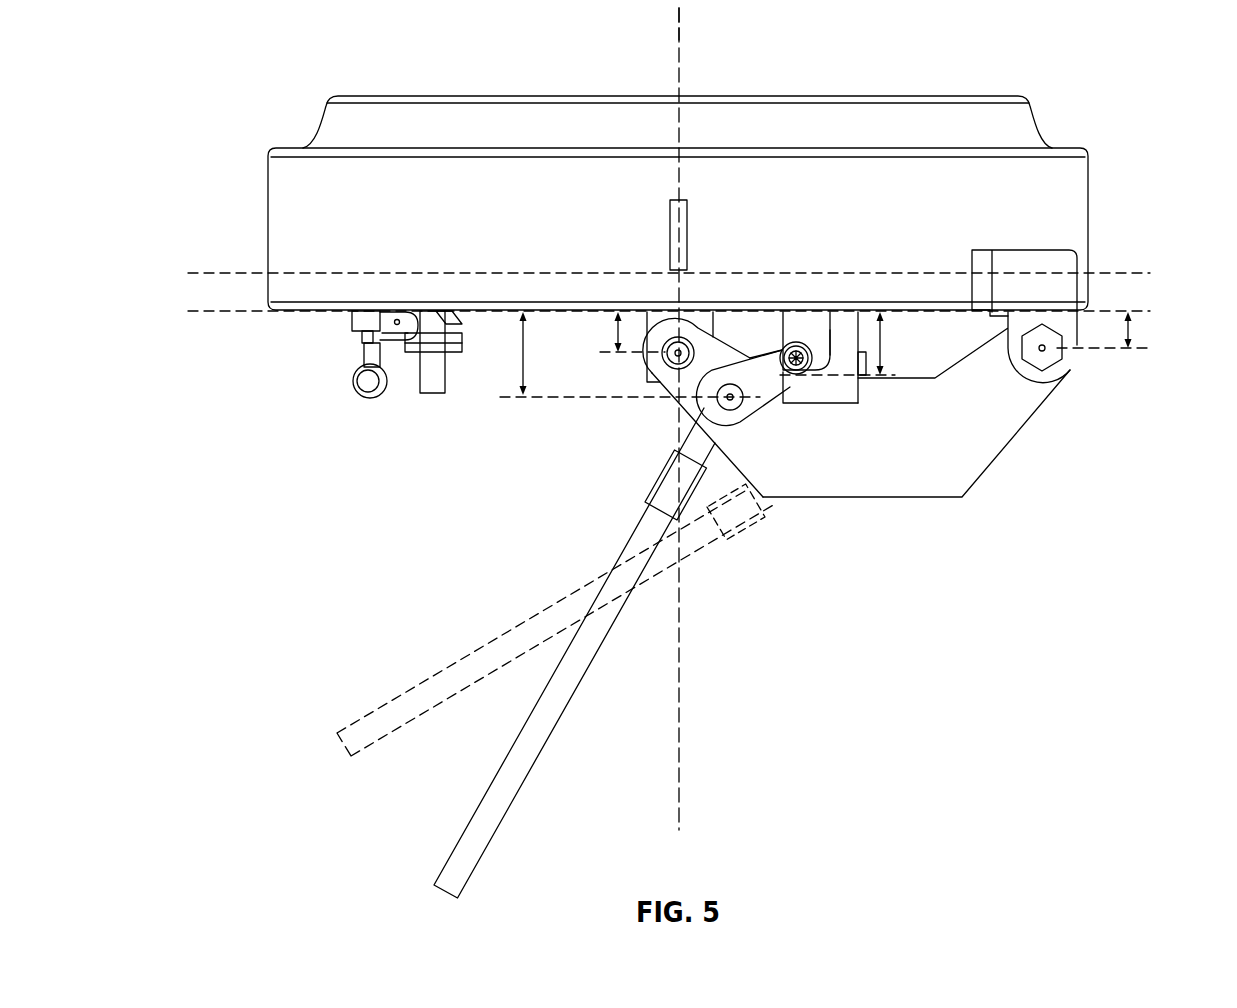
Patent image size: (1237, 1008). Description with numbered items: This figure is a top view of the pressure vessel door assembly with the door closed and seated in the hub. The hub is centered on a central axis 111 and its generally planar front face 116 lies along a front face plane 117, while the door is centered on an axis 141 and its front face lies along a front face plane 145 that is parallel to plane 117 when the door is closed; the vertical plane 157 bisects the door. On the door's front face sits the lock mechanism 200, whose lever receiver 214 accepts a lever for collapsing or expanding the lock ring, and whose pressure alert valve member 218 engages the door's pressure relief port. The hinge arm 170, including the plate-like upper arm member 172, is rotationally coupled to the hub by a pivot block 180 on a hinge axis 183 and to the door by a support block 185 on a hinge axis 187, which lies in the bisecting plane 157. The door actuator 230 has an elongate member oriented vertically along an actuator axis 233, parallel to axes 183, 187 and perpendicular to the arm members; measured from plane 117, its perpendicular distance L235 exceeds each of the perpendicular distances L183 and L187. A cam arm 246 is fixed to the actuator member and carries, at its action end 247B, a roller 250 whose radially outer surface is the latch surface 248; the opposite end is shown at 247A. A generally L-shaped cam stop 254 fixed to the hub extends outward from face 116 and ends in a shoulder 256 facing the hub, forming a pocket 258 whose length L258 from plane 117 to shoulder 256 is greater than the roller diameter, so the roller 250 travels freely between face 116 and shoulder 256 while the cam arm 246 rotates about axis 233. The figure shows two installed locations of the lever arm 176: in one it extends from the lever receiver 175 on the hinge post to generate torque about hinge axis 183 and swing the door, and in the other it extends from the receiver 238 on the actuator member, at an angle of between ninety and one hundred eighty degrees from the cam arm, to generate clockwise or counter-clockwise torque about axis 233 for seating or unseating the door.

The central axis 111 is at (679, 35).
The vertical plane 157 is at (679, 14).
The axis 141 is at (679, 78).
The front face plane 145 is at (244, 272).
The front face plane 117 is at (244, 310).
The front face 116 is at (289, 322).
The lock mechanism 200 is at (392, 320).
The lever receiver 214 is at (370, 398).
The pressure alert valve member 218 is at (440, 375).
The perpendicular distance L235 is at (520, 372).
The hinge axis 187 is at (672, 325).
The support block 185 is at (668, 322).
The perpendicular distance L187 is at (617, 350).
The first arm 247A is at (740, 420).
The action end 247B is at (785, 370).
The actuator axis 233 is at (728, 398).
The cam arm 246 is at (745, 348).
The latch surface 248 is at (787, 340).
The door actuator 230 is at (788, 328).
The roller 250 is at (815, 372).
The shoulder 256 is at (855, 385).
The pocket 258 is at (845, 330).
The cam stop 254 is at (860, 330).
The pocket length L258 is at (883, 350).
The pivot block 180 is at (1035, 268).
The hinge arm 170 is at (1002, 408).
The upper arm member 172 is at (972, 457).
The hinge axis 183 is at (1050, 350).
The perpendicular distance L183 is at (1140, 330).
The lever arm 176 is at (470, 875).
The receiver 238 is at (652, 500).
The lever receiver 175 is at (758, 500).